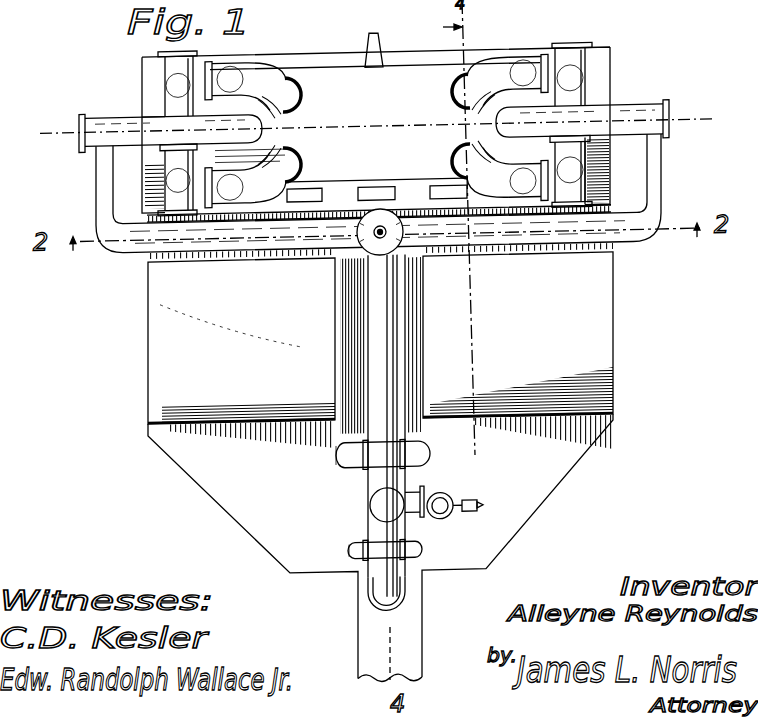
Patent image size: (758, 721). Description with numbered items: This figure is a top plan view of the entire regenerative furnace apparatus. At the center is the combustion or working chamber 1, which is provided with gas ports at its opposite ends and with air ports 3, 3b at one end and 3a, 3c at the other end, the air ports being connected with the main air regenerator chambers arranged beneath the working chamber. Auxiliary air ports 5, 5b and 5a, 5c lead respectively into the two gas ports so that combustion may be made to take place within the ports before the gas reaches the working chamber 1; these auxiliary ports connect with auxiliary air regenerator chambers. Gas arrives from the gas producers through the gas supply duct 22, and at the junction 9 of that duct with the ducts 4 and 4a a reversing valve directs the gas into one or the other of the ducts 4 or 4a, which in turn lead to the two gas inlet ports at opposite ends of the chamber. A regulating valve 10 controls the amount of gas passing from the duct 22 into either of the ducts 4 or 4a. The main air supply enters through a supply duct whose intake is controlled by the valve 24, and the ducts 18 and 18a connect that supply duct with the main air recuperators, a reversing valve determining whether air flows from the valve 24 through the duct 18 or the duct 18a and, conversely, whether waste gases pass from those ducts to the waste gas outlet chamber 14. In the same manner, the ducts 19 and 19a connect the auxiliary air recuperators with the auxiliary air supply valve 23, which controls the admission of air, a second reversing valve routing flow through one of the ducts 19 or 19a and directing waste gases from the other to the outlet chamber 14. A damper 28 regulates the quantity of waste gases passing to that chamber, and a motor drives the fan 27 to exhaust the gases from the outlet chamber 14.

The combustion or working chamber 1 is at (395, 80).
The air port 3 is at (322, 153).
The air port 3a is at (465, 148).
The air port 3b is at (302, 92).
The air port 3c is at (472, 85).
The duct 4 is at (105, 187).
The duct 4a is at (657, 197).
The auxiliary air port 5 is at (173, 168).
The auxiliary air port 5a is at (590, 166).
The auxiliary air port 5b is at (180, 98).
The auxiliary air port 5c is at (592, 52).
The junction 9 is at (393, 248).
The regulating valve 10 is at (383, 229).
The waste gas outlet chamber 14 is at (365, 504).
The duct 18 is at (365, 467).
The duct 18a is at (430, 460).
The duct 19 is at (353, 542).
The duct 19a is at (410, 546).
The gas supply duct 22 is at (392, 338).
The auxiliary air supply valve 23 is at (383, 567).
The valve 24 is at (370, 472).
The fan 27 is at (452, 498).
The damper 28 is at (480, 512).